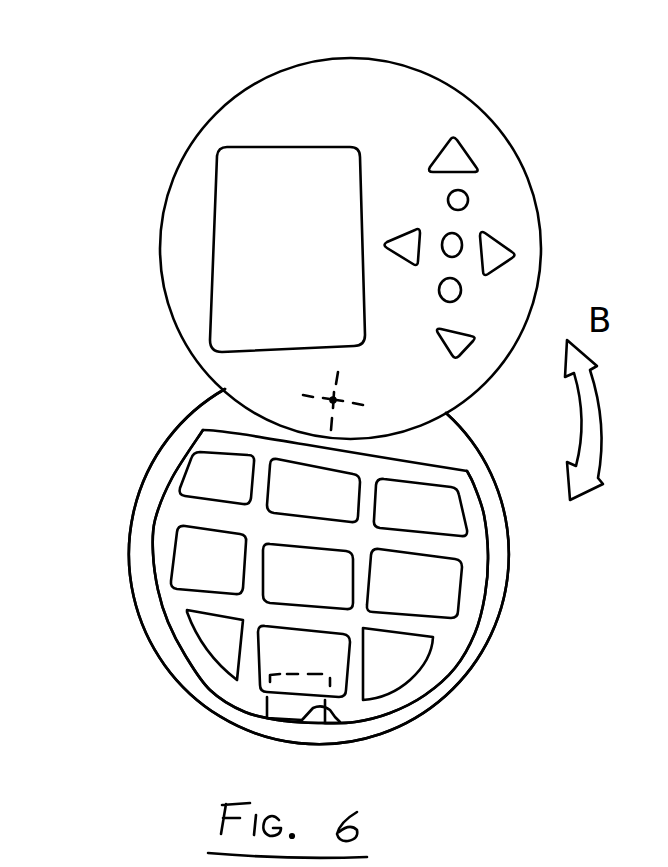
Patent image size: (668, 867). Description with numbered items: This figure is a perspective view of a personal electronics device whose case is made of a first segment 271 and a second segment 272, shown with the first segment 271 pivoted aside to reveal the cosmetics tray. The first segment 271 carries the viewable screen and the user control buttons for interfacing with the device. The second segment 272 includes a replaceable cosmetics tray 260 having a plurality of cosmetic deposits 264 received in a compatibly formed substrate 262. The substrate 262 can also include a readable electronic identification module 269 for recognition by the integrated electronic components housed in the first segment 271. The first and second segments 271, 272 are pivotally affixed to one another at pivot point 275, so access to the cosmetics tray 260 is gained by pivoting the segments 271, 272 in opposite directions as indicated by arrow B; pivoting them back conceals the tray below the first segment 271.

The replaceable cosmetics tray 260 is at (487, 562).
The substrate 262 is at (178, 518).
The cosmetic deposits 264 is at (210, 472).
The readable electronic identification module 269 is at (327, 703).
The first segment 271 is at (167, 197).
The second segment 272 is at (130, 543).
The pivot point 275 is at (325, 395).